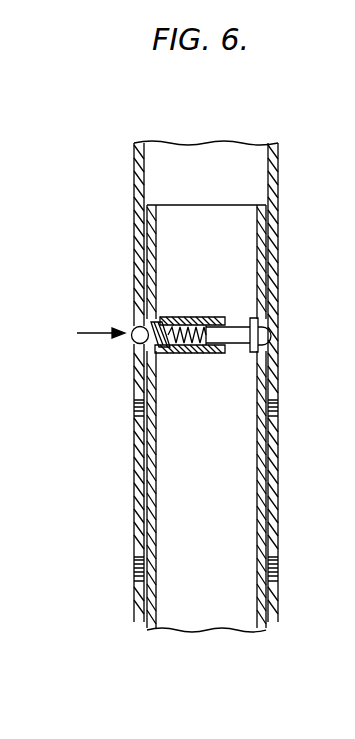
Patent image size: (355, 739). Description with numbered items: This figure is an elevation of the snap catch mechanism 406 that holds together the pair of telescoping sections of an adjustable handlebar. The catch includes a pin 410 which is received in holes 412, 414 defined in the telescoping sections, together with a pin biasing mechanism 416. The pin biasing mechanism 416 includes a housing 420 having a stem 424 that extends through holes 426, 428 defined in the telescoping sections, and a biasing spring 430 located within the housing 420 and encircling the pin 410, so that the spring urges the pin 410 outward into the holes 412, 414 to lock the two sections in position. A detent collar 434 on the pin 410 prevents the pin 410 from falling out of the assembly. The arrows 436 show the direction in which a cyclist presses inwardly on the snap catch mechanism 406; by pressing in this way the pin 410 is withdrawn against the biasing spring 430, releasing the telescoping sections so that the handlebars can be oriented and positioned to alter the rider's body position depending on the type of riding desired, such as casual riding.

The snap catch mechanism 406 is at (212, 314).
The pin 410 is at (256, 320).
The hole 412 is at (280, 410).
The hole 414 is at (243, 350).
The pin biasing mechanism 416 is at (189, 314).
The housing 420 is at (209, 318).
The stem 424 is at (135, 345).
The hole 426 is at (159, 352).
The hole 428 is at (137, 410).
The biasing spring 430 is at (175, 317).
The detent collar 434 is at (330, 336).
The arrows 436 is at (108, 330).